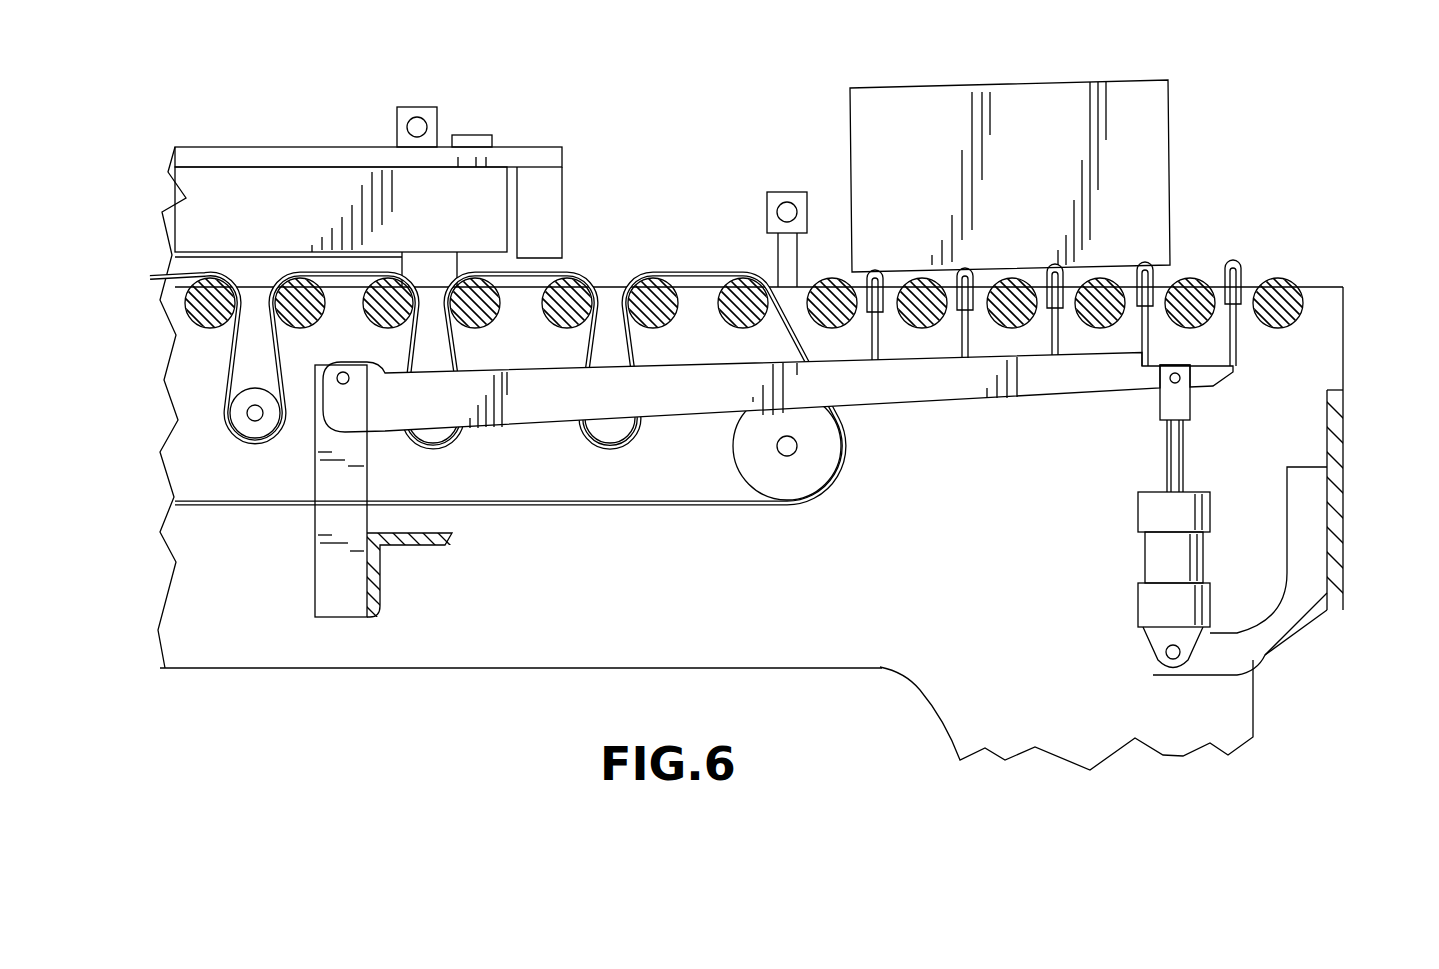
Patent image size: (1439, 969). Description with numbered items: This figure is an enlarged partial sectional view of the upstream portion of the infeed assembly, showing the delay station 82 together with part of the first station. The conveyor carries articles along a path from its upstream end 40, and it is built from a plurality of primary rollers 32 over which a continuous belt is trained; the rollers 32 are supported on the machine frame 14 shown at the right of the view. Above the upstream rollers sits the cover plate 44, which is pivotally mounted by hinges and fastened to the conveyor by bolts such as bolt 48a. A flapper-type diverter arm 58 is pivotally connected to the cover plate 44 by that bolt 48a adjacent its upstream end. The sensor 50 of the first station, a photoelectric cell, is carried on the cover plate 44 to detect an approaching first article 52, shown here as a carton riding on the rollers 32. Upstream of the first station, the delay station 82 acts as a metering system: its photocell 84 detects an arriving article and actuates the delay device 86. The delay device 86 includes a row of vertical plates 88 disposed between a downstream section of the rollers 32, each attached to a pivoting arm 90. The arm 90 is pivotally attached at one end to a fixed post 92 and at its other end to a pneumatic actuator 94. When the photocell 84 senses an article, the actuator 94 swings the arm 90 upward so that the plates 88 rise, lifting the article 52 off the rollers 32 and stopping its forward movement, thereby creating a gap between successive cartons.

The frame 14 is at (1345, 333).
The primary roller 32 is at (185, 305).
The upstream end 40 is at (1345, 250).
The cover plate 44 is at (258, 147).
The bolt 48a is at (478, 135).
The sensor 50 is at (410, 107).
The article 52 is at (935, 88).
The diverter arm 58 is at (185, 200).
The delay station 82 is at (805, 165).
The photocell 84 is at (767, 205).
The delay device 86 is at (977, 428).
The vertical plate 88 is at (1247, 342).
The pivoting arm 90 is at (897, 405).
The fixed post 92 is at (315, 565).
The pneumatic actuator 94 is at (1140, 560).